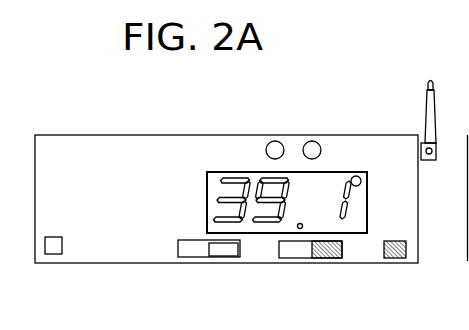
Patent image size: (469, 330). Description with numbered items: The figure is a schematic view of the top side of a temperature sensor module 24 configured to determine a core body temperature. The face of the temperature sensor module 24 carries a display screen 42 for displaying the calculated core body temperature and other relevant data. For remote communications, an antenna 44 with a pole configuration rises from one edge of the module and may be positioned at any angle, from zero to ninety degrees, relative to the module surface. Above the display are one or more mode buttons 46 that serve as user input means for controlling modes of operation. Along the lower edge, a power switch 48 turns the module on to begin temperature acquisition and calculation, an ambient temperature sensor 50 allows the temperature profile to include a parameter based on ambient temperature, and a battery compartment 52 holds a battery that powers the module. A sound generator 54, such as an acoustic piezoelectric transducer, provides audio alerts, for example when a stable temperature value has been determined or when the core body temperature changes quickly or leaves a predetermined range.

The temperature sensor module 24 is at (70, 135).
The display screen 42 is at (355, 203).
The antenna 44 is at (430, 100).
The mode buttons 46 is at (308, 141).
The power switch 48 is at (313, 259).
The ambient temperature sensor 50 is at (388, 259).
The battery compartment 52 is at (202, 258).
The sound generator 54 is at (55, 255).